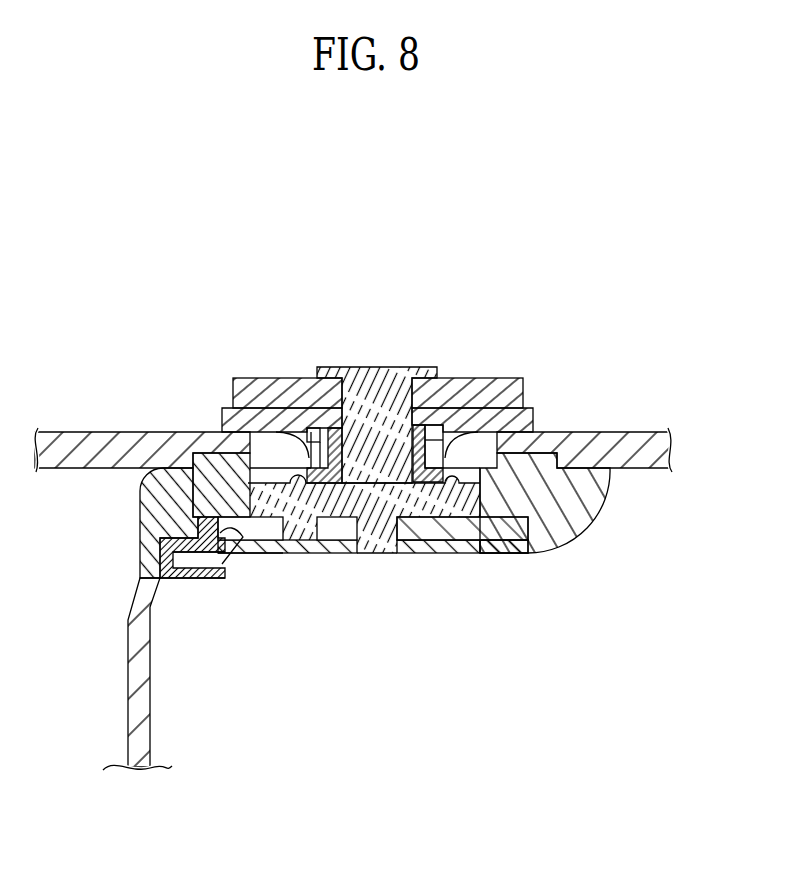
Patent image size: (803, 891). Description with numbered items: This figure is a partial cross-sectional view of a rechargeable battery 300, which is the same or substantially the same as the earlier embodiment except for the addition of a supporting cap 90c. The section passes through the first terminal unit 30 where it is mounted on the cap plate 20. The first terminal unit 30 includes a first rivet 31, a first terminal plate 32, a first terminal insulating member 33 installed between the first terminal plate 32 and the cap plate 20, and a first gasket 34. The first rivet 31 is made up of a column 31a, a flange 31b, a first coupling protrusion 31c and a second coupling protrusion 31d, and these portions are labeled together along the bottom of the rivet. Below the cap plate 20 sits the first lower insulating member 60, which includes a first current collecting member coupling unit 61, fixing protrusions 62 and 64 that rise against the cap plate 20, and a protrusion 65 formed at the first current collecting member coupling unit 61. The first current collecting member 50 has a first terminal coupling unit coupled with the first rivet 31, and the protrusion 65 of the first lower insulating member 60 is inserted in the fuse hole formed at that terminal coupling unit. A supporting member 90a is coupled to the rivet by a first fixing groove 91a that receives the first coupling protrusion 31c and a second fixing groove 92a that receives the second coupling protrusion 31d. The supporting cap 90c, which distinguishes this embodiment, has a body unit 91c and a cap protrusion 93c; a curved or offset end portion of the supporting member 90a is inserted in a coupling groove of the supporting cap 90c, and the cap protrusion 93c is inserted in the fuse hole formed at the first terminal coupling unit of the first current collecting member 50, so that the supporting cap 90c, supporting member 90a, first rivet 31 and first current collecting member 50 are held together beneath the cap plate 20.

The rechargeable battery 300 is at (397, 212).
The cap plate 20 is at (634, 430).
The first terminal unit 30 is at (400, 494).
The first rivet 31 is at (373, 588).
The column 31a is at (338, 554).
The flange 31b is at (462, 595).
The first coupling protrusion 31c is at (372, 554).
The second coupling protrusion 31d is at (303, 554).
The first terminal plate 32 is at (496, 391).
The first terminal insulating member 33 is at (525, 430).
The first gasket 34 is at (452, 424).
The first current collecting member 50 is at (126, 621).
The first lower insulating member 60 is at (347, 534).
The first current collecting member coupling unit 61 is at (157, 493).
The fixing protrusion 62 is at (212, 460).
The fixing protrusion 64 is at (541, 460).
The protrusion 65 is at (183, 519).
The supporting member 90a is at (493, 565).
The supporting cap 90c is at (182, 585).
The first fixing groove 91a is at (385, 536).
The body unit 91c is at (210, 575).
The second fixing groove 92a is at (300, 556).
The cap protrusion 93c is at (247, 551).